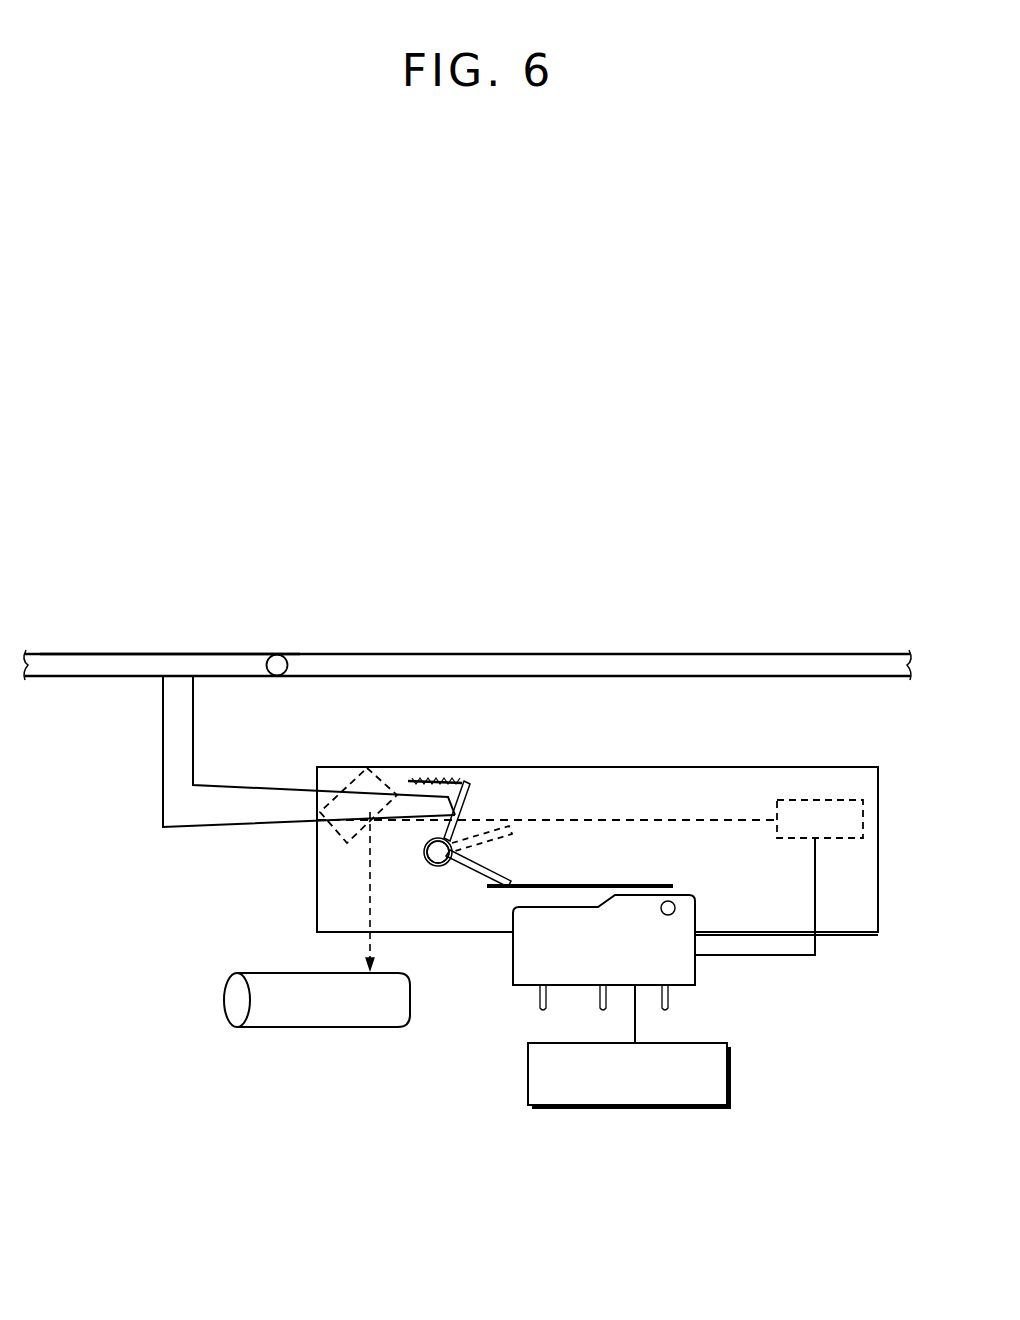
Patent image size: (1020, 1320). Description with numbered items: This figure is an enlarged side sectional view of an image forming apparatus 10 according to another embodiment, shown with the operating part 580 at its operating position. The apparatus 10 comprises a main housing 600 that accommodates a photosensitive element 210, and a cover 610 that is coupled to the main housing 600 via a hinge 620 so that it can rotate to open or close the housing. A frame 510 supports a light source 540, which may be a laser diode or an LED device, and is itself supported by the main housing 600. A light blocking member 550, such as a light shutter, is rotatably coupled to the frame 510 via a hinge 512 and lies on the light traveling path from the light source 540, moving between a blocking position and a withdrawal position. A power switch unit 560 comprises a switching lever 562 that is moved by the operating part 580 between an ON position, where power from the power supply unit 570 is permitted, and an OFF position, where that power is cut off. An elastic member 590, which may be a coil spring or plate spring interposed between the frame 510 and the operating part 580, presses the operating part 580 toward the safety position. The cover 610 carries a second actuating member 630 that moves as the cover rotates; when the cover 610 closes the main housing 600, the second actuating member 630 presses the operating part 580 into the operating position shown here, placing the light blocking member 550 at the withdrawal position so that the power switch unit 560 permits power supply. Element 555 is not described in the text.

The image forming apparatus 10 is at (385, 490).
The main housing 600 is at (582, 657).
The cover 610 is at (122, 657).
The hinge 620 is at (273, 655).
The second actuating member 630 is at (178, 758).
The frame 510 is at (633, 767).
The reflecting mirror 555 is at (340, 775).
The elastic member 590 is at (413, 778).
The operating part 580 is at (467, 783).
The light blocking member 550 is at (500, 820).
The switching lever 562 is at (617, 886).
The light source 540 is at (818, 800).
The hinge 512 is at (438, 866).
The power switch unit 560 is at (697, 975).
The power supply unit 570 is at (733, 1063).
The photosensitive element 210 is at (245, 972).